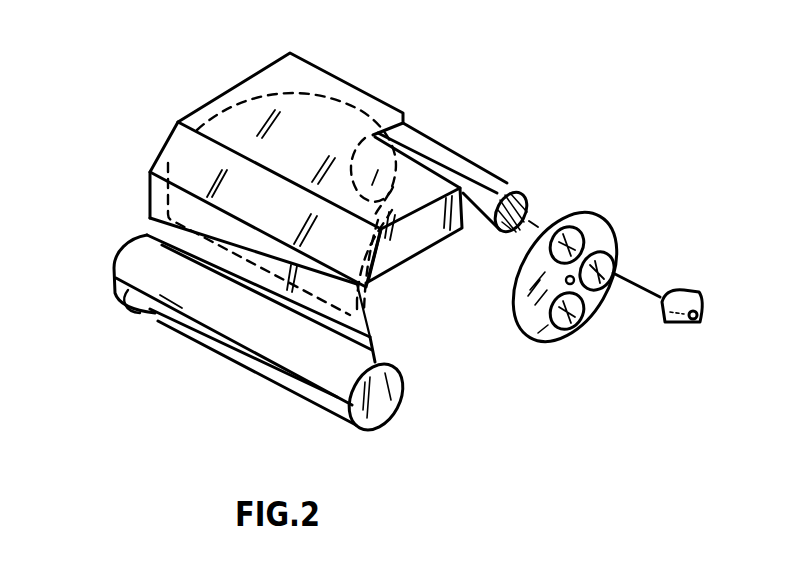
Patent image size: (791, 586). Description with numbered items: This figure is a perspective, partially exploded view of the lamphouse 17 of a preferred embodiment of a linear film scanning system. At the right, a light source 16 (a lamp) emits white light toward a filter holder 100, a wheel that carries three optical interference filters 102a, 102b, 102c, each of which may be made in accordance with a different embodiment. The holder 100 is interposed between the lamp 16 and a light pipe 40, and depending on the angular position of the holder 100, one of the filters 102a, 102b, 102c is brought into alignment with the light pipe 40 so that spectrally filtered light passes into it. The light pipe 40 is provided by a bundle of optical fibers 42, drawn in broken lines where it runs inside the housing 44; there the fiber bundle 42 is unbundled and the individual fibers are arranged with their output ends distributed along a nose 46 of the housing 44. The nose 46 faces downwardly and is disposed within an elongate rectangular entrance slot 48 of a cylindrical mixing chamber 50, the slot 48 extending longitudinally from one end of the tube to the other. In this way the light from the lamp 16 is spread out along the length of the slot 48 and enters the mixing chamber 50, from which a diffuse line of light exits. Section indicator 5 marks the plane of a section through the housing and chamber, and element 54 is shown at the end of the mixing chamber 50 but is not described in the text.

The lamphouse 17 is at (497, 128).
The bundle of optical fibers 42 is at (223, 92).
The section line 5- 5 is at (148, 204).
The light pipe 40 is at (510, 183).
The housing 44 is at (427, 237).
The nose 46 is at (376, 338).
The entrance slot 48 is at (148, 238).
The mixing chamber 50 is at (396, 405).
The roller bushing 54 is at (155, 313).
The filter holder 100 is at (605, 215).
The optical interference filter 102a is at (585, 246).
The optical interference filter 102b is at (610, 290).
The optical interference filter 102c is at (583, 329).
The light source 16 is at (690, 294).